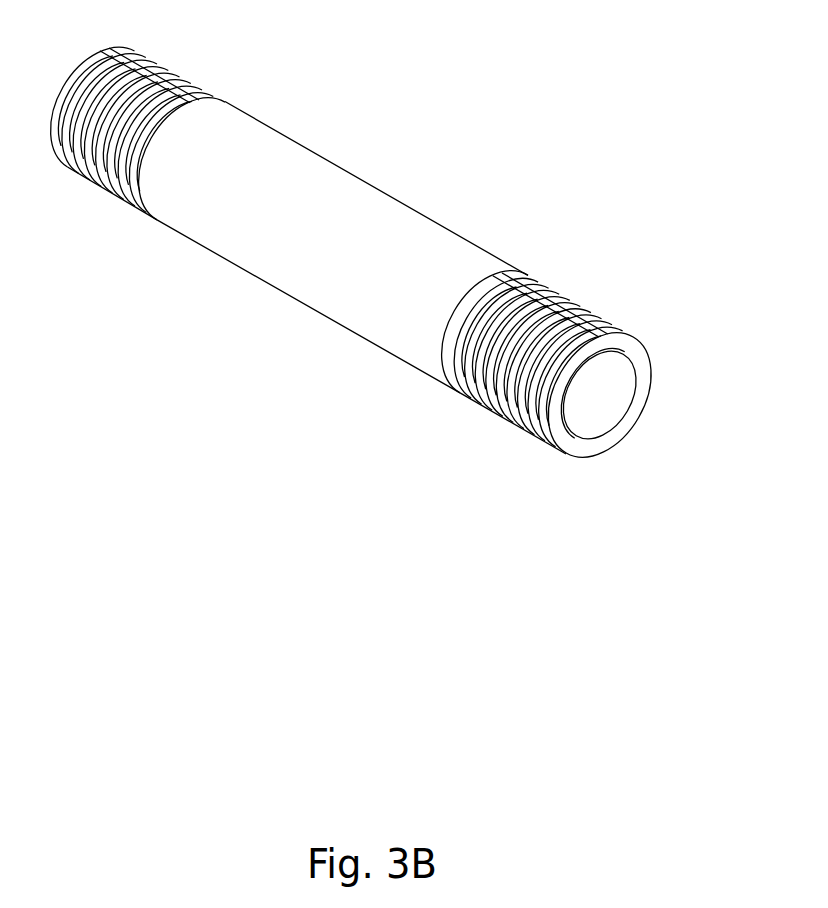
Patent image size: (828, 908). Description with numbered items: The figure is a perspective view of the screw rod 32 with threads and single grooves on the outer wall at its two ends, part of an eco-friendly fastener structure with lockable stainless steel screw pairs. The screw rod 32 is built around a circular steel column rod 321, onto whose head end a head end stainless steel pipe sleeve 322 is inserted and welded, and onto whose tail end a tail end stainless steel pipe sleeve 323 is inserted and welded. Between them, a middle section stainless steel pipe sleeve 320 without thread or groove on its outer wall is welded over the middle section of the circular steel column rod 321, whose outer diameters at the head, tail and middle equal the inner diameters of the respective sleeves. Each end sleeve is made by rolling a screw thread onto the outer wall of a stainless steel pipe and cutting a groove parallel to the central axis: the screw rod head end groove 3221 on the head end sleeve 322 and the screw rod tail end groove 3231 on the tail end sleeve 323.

The screw rod 32 is at (373, 278).
The middle section stainless steel pipe sleeve 320 is at (298, 283).
The circular steel column rod 321 is at (590, 415).
The head end stainless steel pipe sleeve 322 is at (172, 183).
The screw rod head end groove 3221 is at (167, 66).
The tail end stainless steel pipe sleeve 323 is at (514, 372).
The screw rod tail end groove 3231 is at (567, 322).